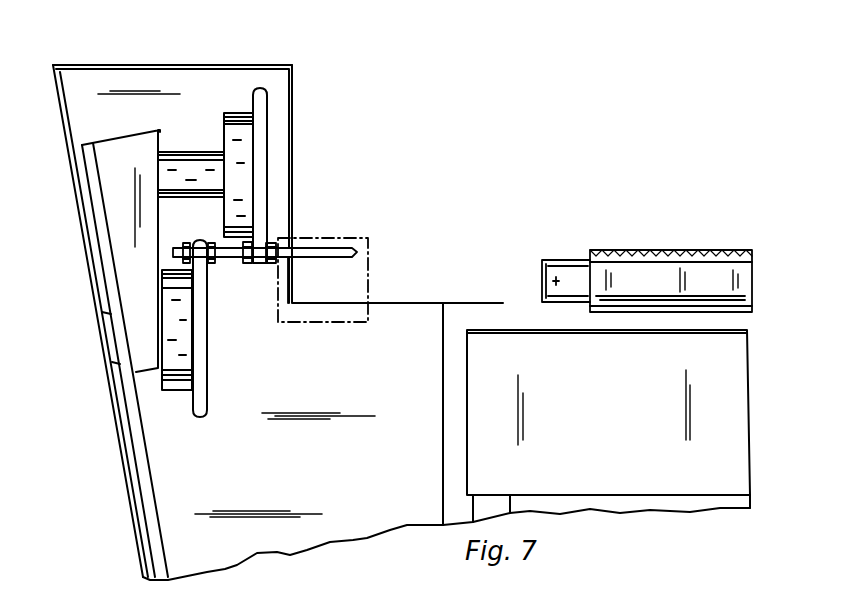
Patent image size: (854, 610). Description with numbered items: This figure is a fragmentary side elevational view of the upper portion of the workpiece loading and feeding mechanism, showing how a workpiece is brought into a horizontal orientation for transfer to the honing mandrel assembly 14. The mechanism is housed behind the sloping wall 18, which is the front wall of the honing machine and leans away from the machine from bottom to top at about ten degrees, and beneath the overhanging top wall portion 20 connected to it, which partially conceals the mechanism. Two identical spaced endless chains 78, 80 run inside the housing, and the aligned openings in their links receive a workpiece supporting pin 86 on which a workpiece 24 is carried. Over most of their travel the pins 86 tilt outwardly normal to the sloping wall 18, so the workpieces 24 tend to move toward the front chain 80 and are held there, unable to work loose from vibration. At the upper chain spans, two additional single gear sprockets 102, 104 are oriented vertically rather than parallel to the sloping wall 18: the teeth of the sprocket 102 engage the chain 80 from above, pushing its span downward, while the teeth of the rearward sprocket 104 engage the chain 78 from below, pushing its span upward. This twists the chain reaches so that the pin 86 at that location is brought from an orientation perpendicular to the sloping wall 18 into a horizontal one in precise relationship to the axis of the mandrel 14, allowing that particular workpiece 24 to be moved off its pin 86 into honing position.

The honing mandrel assembly 14 is at (670, 249).
The sloping wall 18 is at (115, 413).
The overhanging top wall portion 20 is at (220, 64).
The workpiece 24 is at (372, 275).
The endless chain 78 is at (188, 243).
The endless chain 80 is at (247, 265).
The workpiece supporting pin 86 is at (320, 250).
The single gear sprocket 102 is at (268, 121).
The single gear sprocket 104 is at (208, 371).